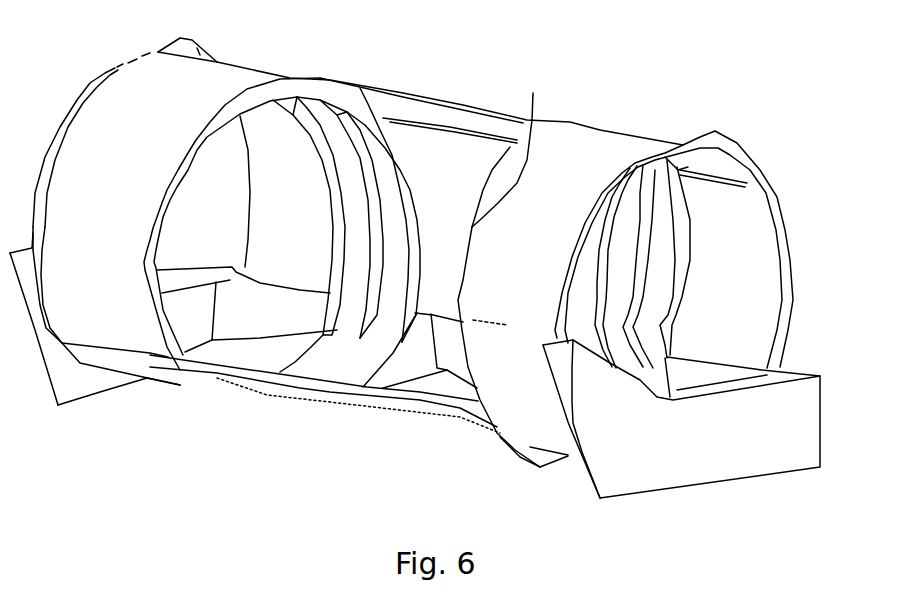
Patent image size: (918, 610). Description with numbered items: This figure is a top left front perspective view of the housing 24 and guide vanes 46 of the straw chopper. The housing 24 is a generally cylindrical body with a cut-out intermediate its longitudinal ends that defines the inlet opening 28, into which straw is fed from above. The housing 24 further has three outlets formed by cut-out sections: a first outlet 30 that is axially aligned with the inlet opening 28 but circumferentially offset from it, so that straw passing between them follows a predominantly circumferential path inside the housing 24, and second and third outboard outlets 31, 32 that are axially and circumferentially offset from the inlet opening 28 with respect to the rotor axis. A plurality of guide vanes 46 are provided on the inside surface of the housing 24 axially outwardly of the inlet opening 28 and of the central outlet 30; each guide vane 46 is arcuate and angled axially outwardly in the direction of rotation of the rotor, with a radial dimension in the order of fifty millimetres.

The housing 24 is at (401, 251).
The inlet opening 28 is at (513, 131).
The first outlet 30 is at (447, 398).
The second outlet 31 is at (247, 367).
The third outlet 32 is at (681, 445).
The guide vanes 46 is at (492, 204).